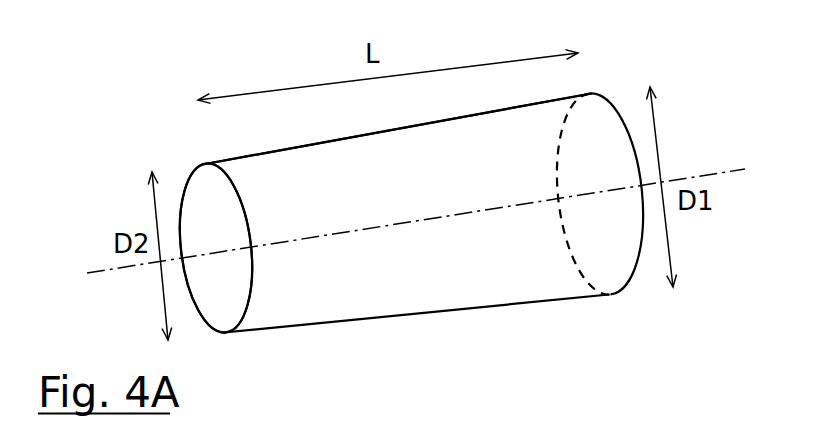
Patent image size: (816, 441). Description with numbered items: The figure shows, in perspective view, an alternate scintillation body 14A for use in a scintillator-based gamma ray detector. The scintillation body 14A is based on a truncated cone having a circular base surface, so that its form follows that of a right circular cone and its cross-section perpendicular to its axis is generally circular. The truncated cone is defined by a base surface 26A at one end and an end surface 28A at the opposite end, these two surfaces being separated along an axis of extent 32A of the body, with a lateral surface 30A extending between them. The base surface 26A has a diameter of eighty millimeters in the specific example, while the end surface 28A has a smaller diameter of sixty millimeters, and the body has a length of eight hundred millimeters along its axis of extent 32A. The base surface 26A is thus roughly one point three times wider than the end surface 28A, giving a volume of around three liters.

The scintillation body 14A is at (312, 312).
The base surface 26A is at (597, 97).
The end surface 28A is at (208, 178).
The lateral surface 30A is at (468, 135).
The axis of extent 32A is at (703, 170).